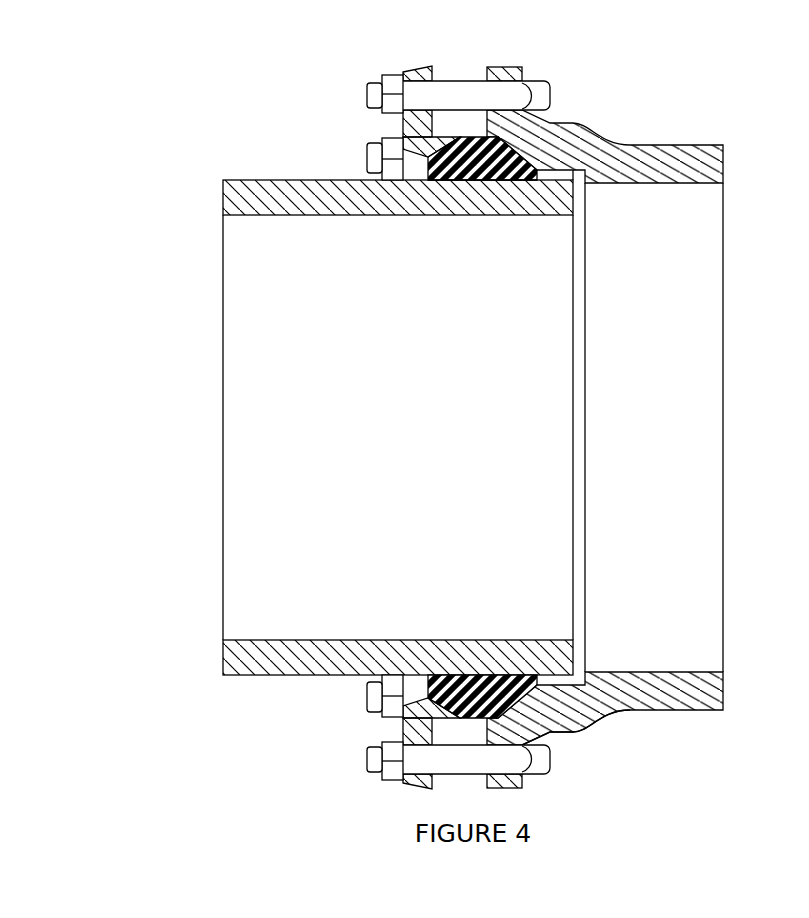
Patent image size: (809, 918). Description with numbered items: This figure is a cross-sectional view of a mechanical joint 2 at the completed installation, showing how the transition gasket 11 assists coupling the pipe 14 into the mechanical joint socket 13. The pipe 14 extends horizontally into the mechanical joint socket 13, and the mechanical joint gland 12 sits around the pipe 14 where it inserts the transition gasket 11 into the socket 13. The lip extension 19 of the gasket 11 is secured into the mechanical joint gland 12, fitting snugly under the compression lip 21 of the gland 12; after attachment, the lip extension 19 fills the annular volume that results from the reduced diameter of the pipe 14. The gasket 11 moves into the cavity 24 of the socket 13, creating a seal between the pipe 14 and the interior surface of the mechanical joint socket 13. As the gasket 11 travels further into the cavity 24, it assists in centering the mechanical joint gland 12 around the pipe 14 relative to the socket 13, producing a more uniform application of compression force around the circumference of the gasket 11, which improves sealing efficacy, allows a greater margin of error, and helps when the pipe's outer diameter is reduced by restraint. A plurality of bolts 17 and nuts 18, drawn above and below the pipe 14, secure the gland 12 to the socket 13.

The mechanical joint 2 is at (405, 406).
The transition gasket 11 is at (505, 150).
The mechanical joint gland 12 is at (412, 66).
The mechanical joint socket 13 is at (568, 122).
The pipe 14 is at (278, 193).
The bolts 17 is at (484, 80).
The nuts 18 is at (386, 74).
The lip extension 19 is at (432, 181).
The compression lip 21 is at (403, 138).
The cavity 24 is at (584, 712).